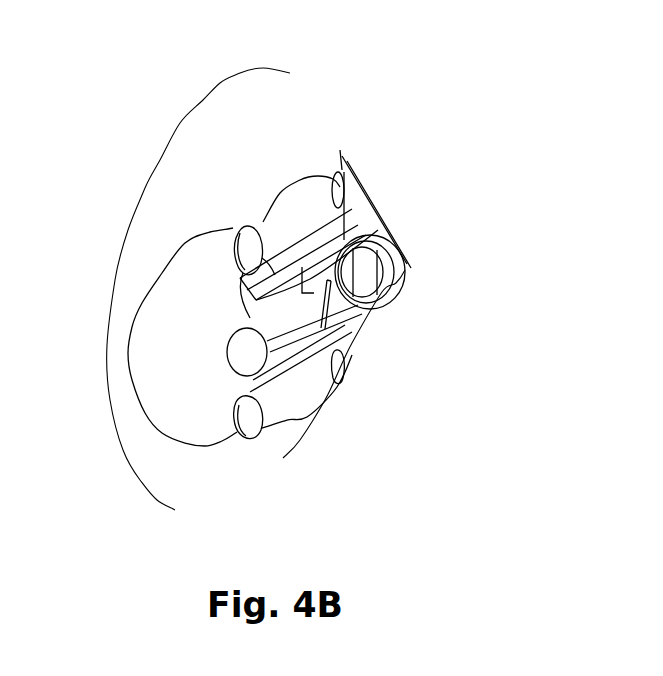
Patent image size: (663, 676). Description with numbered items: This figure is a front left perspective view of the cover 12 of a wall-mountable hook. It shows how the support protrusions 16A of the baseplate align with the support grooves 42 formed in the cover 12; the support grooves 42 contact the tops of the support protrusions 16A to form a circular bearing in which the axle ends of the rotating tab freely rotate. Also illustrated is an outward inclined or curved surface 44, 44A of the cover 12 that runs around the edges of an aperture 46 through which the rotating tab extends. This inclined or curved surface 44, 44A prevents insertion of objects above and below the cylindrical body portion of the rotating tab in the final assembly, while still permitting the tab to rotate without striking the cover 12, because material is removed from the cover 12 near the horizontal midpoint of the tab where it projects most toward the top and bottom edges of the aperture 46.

The cover 12 is at (418, 133).
The aperture 46 is at (268, 316).
The outward inclined/curved surface 44 is at (358, 238).
The outward inclined/curved surface 44A is at (340, 334).
The support grooves 42 is at (390, 288).
The support protrusions 16A is at (334, 309).